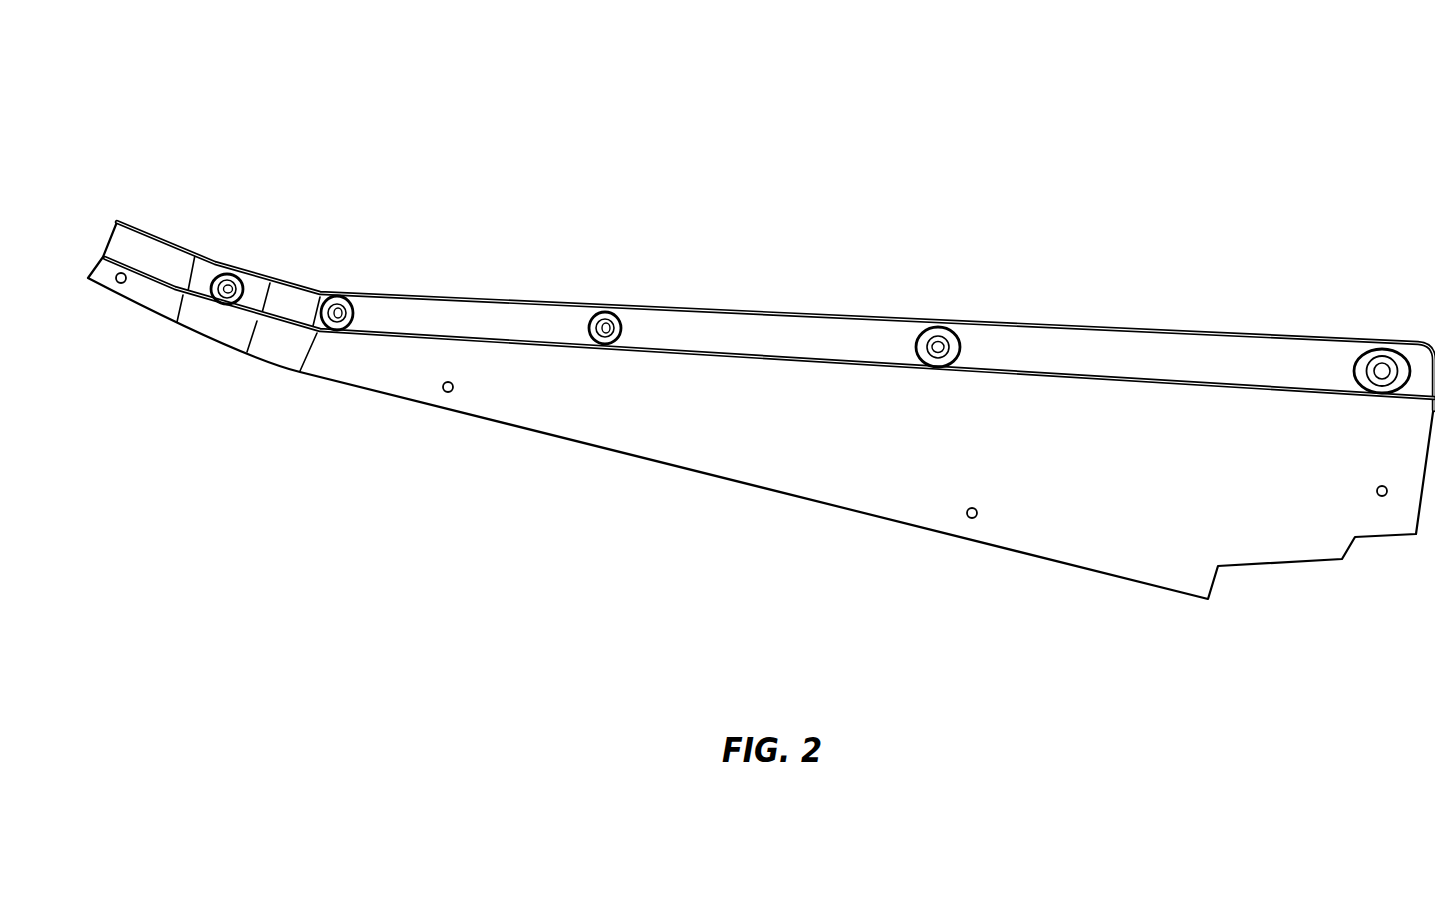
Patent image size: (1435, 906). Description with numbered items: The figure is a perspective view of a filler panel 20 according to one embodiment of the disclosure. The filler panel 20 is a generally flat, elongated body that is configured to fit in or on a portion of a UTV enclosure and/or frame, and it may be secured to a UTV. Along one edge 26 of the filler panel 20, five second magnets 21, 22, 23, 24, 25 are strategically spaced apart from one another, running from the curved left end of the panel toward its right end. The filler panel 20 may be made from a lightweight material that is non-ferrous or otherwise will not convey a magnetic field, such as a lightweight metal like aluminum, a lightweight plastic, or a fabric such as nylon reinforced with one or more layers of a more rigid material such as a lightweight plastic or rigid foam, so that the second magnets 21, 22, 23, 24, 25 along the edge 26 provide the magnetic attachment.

The filler panel 20 is at (851, 176).
The second magnet 21 is at (232, 274).
The second magnet 22 is at (338, 297).
The second magnet 23 is at (601, 313).
The second magnet 24 is at (938, 328).
The second magnet 25 is at (1383, 347).
The edge 26 is at (1186, 331).